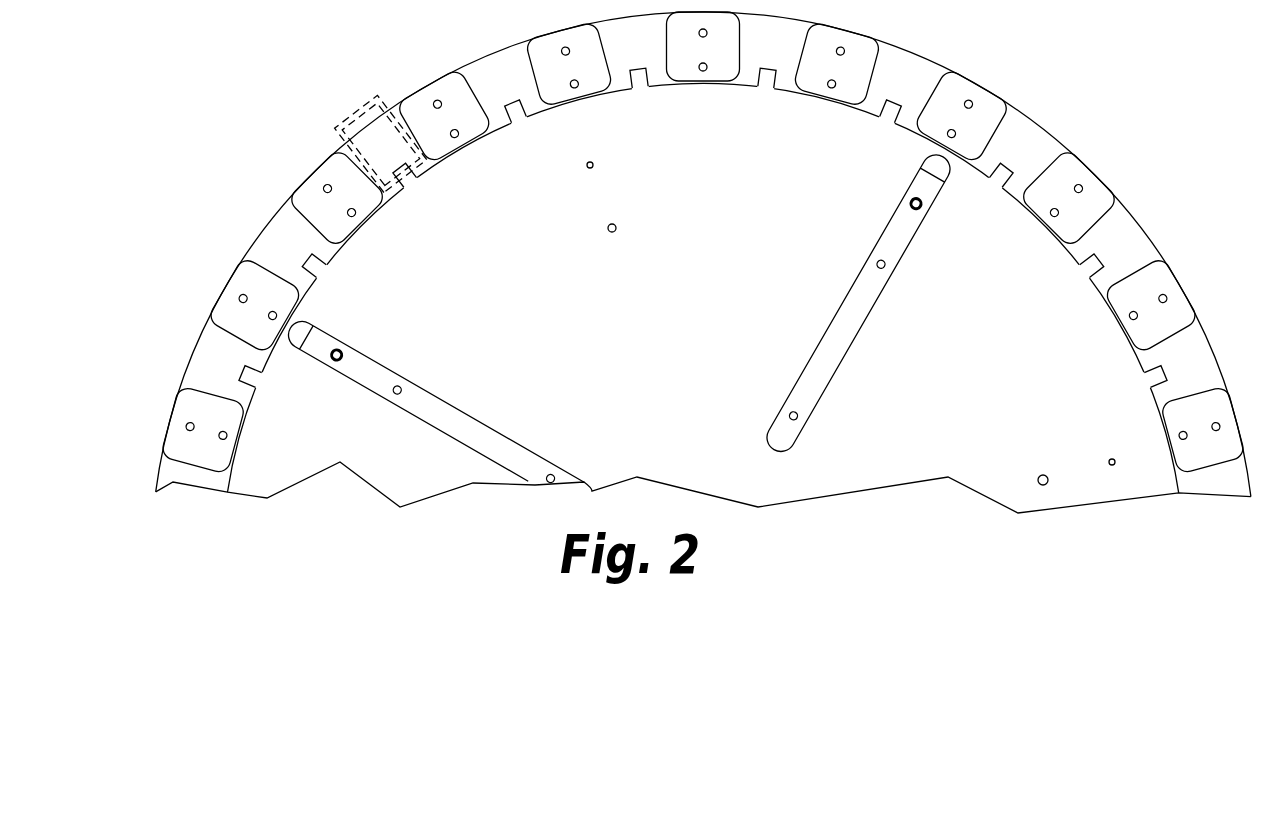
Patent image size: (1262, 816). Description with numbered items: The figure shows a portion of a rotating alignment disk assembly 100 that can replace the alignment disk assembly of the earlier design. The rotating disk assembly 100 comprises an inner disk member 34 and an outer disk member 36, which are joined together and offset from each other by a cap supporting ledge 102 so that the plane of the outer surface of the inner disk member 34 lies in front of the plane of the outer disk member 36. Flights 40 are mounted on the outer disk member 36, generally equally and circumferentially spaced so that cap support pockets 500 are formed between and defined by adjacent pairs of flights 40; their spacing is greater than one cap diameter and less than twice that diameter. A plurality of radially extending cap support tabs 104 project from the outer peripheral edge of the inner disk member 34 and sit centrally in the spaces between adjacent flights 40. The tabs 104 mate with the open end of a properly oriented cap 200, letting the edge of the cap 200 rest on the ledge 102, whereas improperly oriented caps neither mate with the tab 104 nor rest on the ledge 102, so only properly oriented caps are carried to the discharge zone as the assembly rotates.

The rotating alignment disk assembly 100 is at (703, 262).
The cap 200 is at (317, 117).
The outer disk member 36 is at (1005, 140).
The cap supporting ledge 102 is at (873, 116).
The cap support tab 104 is at (517, 113).
The flight 40 is at (473, 130).
The cap support pocket 500 is at (293, 267).
The inner disk member 34 is at (647, 366).